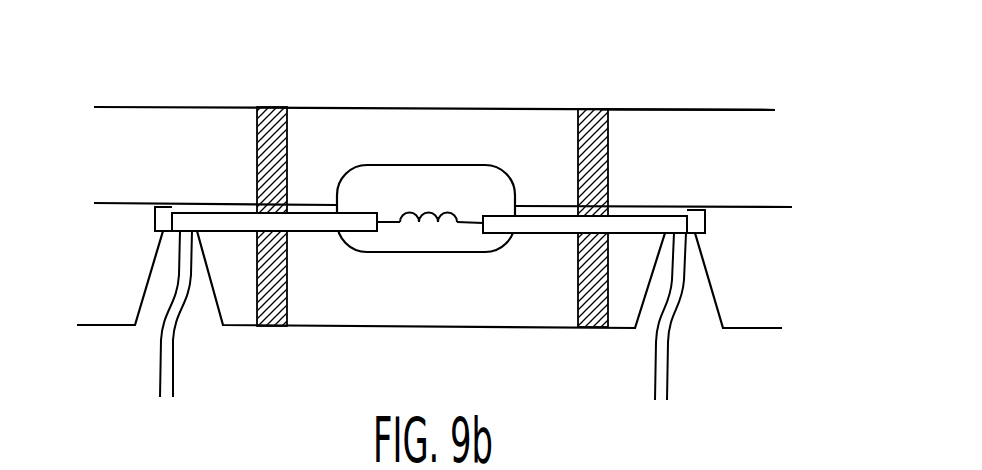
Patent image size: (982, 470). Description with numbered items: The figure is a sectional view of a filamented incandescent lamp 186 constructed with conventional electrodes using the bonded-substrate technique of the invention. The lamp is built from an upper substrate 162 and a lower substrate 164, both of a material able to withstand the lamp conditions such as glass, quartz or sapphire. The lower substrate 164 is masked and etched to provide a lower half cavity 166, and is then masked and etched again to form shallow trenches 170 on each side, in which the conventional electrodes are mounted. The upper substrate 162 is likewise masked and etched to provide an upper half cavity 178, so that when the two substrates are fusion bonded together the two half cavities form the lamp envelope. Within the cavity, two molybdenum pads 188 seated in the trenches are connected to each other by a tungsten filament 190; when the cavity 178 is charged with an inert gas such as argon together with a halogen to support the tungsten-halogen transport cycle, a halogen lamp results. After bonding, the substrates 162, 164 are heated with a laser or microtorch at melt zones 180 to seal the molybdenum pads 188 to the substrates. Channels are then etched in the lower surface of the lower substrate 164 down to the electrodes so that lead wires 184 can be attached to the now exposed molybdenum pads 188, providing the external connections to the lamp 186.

The upper substrate 162 is at (152, 115).
The lower substrate 164 is at (328, 313).
The lower half cavity 166 is at (391, 250).
The shallow trenches 170 is at (156, 215).
The upper half cavity 178 is at (395, 167).
The melt zones 180 is at (267, 107).
The lead wires 184 is at (158, 364).
The filamented incandescent lamp 186 is at (726, 108).
The molybdenum pads 188 is at (225, 220).
The tungsten filament 190 is at (443, 227).